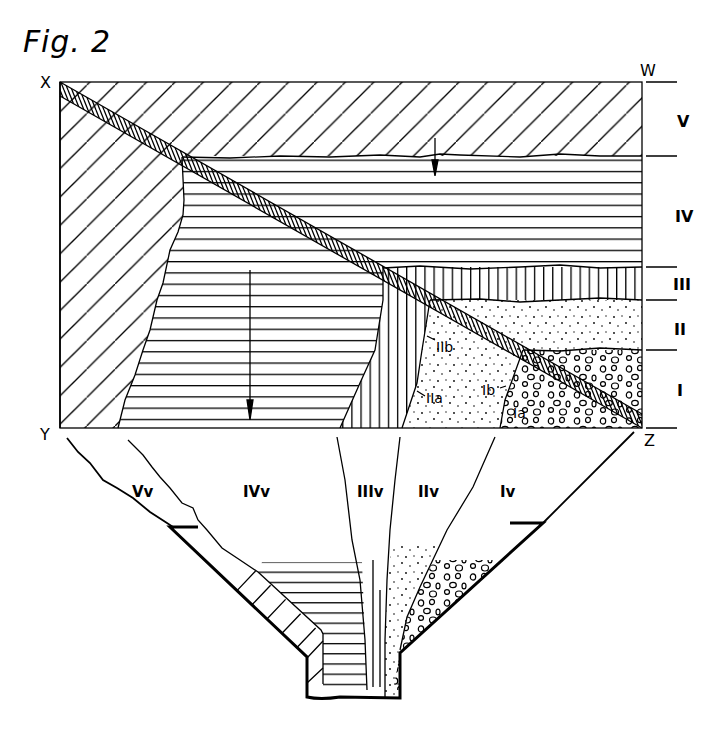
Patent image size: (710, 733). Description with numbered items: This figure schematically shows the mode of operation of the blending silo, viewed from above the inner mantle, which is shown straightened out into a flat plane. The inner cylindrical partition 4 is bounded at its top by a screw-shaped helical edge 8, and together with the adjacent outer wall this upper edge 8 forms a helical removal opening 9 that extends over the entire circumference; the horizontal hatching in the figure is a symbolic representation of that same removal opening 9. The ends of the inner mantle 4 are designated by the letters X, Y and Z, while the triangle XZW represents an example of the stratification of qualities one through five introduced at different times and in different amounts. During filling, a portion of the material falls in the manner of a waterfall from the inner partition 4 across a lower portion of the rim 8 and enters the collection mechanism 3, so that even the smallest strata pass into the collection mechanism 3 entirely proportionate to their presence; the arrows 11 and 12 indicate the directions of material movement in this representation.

The collection mechanism 3 is at (485, 578).
The inner cylindrical partition 4 is at (88, 207).
The screw-shaped helical edge 8 is at (238, 203).
The helical removal opening 9 is at (60, 137).
The direction of layer deposition 11 is at (436, 139).
The direction of material withdrawal 12 is at (252, 340).